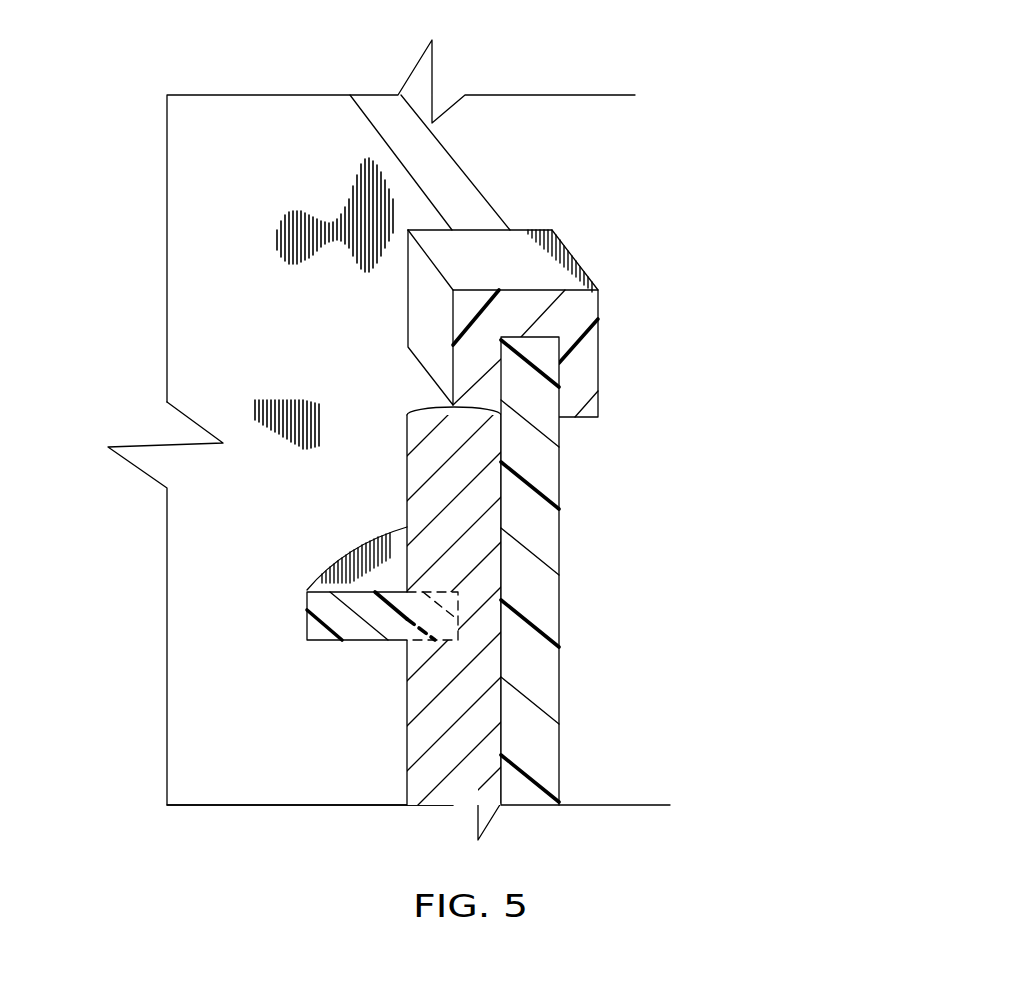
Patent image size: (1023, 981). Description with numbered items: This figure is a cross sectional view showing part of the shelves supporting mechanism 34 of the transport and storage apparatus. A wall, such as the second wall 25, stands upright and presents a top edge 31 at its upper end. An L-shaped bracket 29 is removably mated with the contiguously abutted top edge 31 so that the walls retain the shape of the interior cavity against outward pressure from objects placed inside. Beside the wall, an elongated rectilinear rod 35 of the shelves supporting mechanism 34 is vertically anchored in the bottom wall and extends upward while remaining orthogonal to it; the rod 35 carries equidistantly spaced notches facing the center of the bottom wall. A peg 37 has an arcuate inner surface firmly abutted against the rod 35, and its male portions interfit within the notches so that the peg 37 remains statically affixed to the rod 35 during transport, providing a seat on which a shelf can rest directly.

The second wall 25 is at (552, 475).
The L-shaped bracket 29 is at (563, 275).
The top edge 31 is at (465, 197).
The shelves supporting mechanism 34 is at (900, 203).
The rod 35 is at (417, 513).
The peg 37 is at (317, 635).